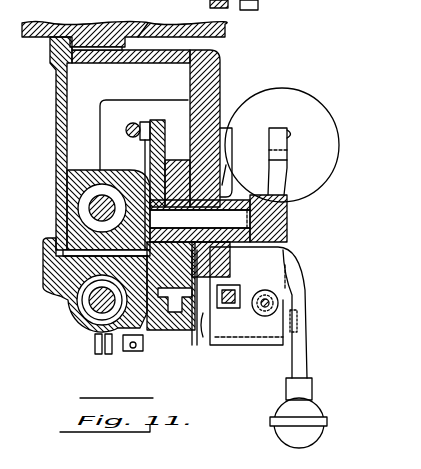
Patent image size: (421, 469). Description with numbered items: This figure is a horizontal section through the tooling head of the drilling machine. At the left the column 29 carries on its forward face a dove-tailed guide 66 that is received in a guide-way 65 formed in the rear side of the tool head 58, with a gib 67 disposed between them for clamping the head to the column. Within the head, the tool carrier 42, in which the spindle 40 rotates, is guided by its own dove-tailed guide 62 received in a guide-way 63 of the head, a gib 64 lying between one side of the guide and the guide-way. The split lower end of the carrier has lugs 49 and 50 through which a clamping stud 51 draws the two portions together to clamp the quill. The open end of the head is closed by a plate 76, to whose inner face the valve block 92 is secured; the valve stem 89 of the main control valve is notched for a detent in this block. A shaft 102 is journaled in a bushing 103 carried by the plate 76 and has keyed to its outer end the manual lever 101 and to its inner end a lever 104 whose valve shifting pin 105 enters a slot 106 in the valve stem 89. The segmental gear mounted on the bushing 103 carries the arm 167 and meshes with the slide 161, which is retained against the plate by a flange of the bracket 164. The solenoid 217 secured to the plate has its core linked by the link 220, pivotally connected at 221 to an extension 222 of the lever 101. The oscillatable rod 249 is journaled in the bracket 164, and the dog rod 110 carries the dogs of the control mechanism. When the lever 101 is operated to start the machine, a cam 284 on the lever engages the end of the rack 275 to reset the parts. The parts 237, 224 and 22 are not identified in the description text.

The column 29 is at (44, 24).
The guide 66 is at (83, 42).
The guide-way 65 is at (90, 52).
The gib 67 is at (144, 40).
The screw 237 is at (258, 6).
The tool head 58 is at (56, 124).
The plate 76 is at (216, 66).
The valve block 92 is at (160, 102).
The guide-way 63 is at (58, 240).
The dove-tailed guide 62 is at (43, 266).
The spindle 40 is at (96, 204).
The tool carrier 42 is at (76, 314).
The valve shifting pin 105 is at (138, 122).
The valve stem 89 is at (128, 137).
The slot 106 is at (144, 146).
The slide bar 224 is at (190, 118).
The lever 104 is at (168, 164).
The arm 167 is at (226, 165).
The bushing 103 is at (220, 182).
The solenoid 217 is at (332, 123).
The link 220 is at (280, 126).
The pivot connection 221 is at (292, 133).
The extension 222 is at (285, 178).
The shaft 102 is at (284, 216).
The slide 161 is at (288, 248).
The bracket 164 is at (300, 264).
The dog rod 110 is at (240, 292).
The oscillatable rod 249 is at (292, 309).
The rack 275 is at (214, 345).
The cam 284 is at (298, 328).
The lever 101 is at (310, 346).
The gib 64 is at (158, 302).
The pin 22 is at (188, 349).
The lug 49 is at (96, 356).
The lug 50 is at (108, 356).
The clamping stud 51 is at (145, 362).